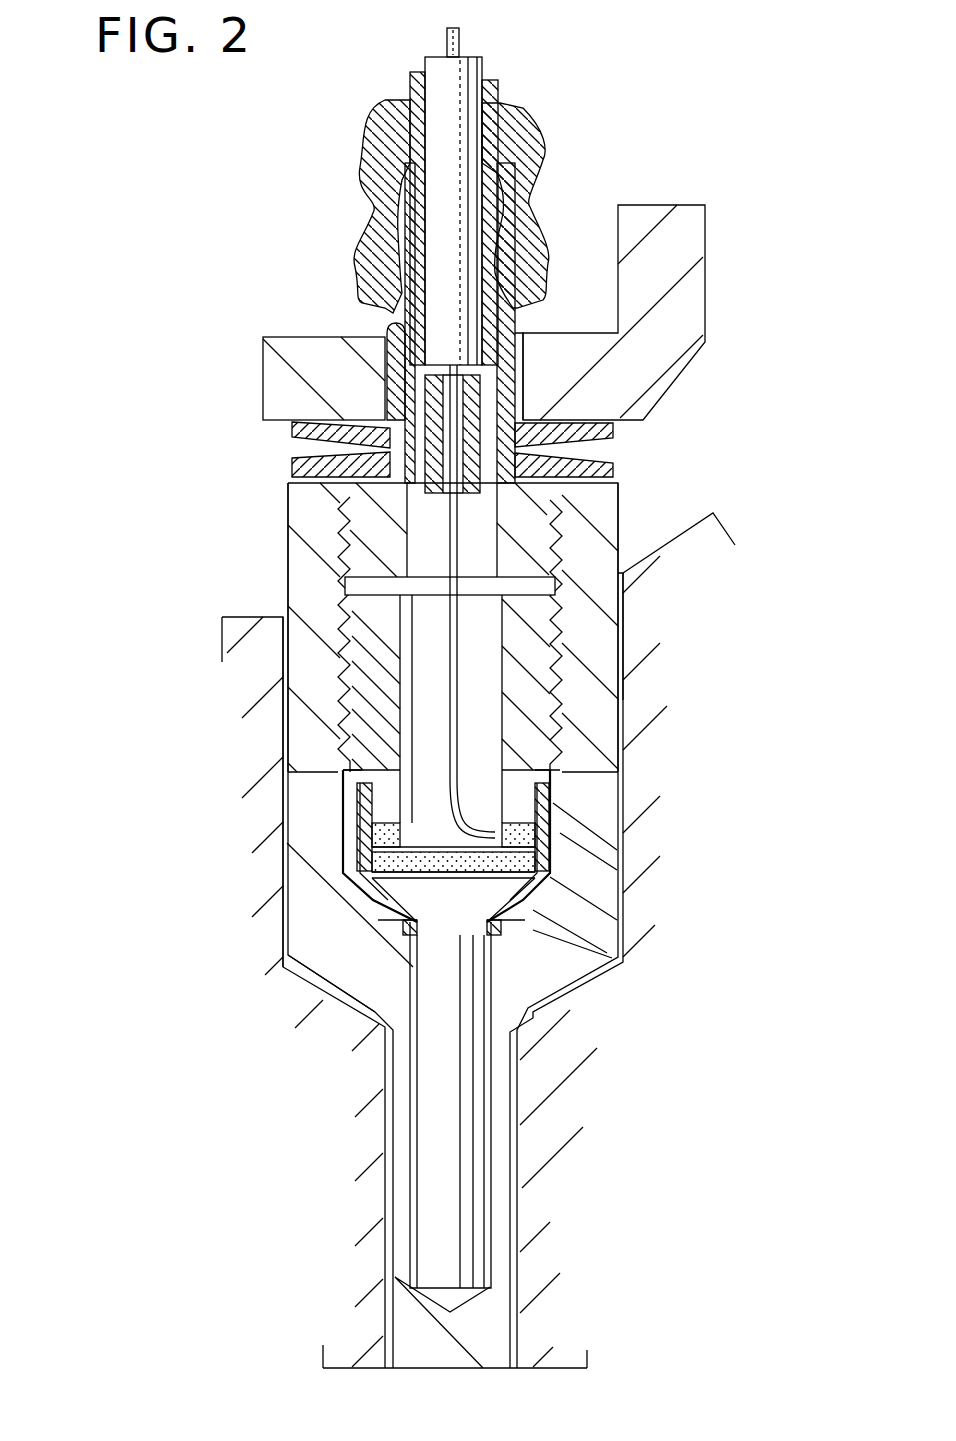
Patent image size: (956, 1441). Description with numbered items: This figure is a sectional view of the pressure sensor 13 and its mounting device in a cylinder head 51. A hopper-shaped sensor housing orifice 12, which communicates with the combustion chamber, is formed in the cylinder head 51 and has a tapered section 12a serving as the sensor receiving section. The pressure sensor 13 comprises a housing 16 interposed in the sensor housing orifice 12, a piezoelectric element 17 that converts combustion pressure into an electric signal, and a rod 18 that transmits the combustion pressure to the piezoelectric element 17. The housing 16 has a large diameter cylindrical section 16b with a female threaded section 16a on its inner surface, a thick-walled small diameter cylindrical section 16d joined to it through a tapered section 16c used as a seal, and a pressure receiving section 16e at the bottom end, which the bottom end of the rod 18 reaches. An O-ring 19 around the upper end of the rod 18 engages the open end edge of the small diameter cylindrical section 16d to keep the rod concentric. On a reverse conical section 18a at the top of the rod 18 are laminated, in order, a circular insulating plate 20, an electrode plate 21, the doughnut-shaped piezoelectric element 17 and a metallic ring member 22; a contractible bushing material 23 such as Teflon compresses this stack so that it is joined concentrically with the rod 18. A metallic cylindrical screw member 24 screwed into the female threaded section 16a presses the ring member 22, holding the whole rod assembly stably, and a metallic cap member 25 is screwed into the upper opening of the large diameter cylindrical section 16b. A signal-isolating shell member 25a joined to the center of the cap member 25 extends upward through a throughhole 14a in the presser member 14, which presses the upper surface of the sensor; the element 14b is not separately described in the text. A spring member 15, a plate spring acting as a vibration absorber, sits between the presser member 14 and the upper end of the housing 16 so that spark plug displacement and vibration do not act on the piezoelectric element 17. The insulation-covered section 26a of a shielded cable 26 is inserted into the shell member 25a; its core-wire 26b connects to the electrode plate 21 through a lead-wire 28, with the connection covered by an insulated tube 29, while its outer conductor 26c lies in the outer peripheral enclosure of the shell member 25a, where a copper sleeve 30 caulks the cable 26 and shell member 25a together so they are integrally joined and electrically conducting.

The sensor housing orifice 12 is at (283, 727).
The tapered section 12a is at (320, 980).
The pressure sensor 13 is at (622, 707).
The presser member 14 is at (290, 337).
The throughhole 14a is at (393, 325).
The cover flange 14b is at (698, 242).
The spring member 15 is at (615, 433).
The housing 16 is at (322, 942).
The female threaded section 16a is at (620, 597).
The large diameter cylindrical section 16b is at (602, 650).
The tapered section 16c is at (373, 977).
The small diameter cylindrical section 16d is at (500, 1180).
The pressure receiving section 16e is at (473, 1342).
The piezoelectric element 17 is at (345, 845).
The rod 18 is at (420, 1213).
The reverse conical section 18a is at (550, 888).
The O-ring 19 is at (620, 952).
The circular insulating plate 20 is at (395, 875).
The electrode plate 21 is at (535, 835).
The metallic ring member 22 is at (548, 776).
The contractible bushing material 23 is at (530, 785).
The metallic cylindrical screw member 24 is at (363, 627).
The metallic cap member 25 is at (590, 515).
The shell member 25a is at (515, 325).
The shielded cable 26 is at (492, 68).
The insulation-covered section 26a is at (440, 105).
The core-wire 26b is at (440, 400).
The outer conductor 26c is at (498, 98).
The lead-wire 28 is at (457, 550).
The insulated tube 29 is at (432, 470).
The sleeve 30 is at (368, 183).
The cylinder head 51 is at (242, 617).